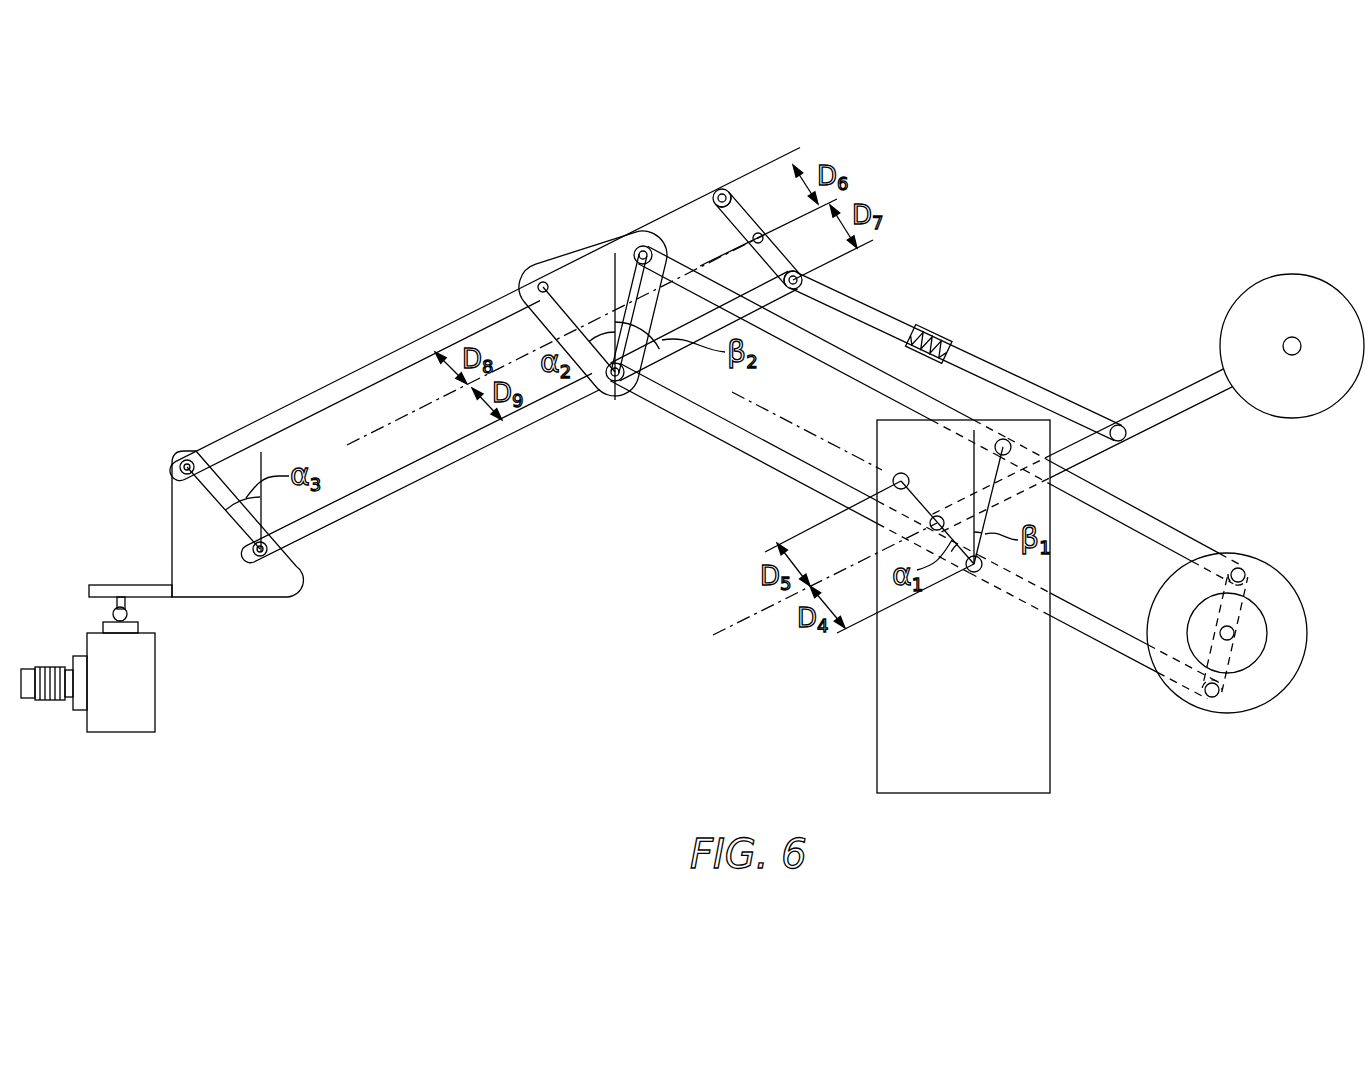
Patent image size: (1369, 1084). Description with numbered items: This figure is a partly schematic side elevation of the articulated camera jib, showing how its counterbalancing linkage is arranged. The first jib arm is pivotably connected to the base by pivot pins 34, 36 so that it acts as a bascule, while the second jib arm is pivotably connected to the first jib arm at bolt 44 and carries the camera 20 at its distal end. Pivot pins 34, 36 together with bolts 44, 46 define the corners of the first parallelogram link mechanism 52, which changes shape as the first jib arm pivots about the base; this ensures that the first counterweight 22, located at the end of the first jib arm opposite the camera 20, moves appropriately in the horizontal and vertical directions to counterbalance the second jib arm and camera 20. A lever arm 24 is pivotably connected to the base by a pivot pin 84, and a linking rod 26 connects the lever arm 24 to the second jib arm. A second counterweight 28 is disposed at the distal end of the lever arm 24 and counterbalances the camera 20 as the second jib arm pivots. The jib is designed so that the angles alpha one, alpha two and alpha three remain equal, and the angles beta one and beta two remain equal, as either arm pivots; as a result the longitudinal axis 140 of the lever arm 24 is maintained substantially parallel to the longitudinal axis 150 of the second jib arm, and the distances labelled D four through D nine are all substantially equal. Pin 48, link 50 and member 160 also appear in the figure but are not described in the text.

The camera 20 is at (122, 722).
The first counterweight 22 is at (1278, 602).
The lever arm 24 is at (1175, 403).
The linking rod 26 is at (987, 358).
The second counterweight 28 is at (1285, 305).
The pivot pin 34 is at (975, 573).
The pivot pin 36 is at (1012, 445).
The bolt 44 is at (615, 383).
The bolt 46 is at (645, 246).
The pivot pin 48 is at (1118, 425).
The pivot link 50 is at (752, 238).
The first parallelogram link mechanism 52 is at (850, 420).
The pivot pin 84 is at (937, 516).
The longitudinal axis of the lever arm 140 is at (748, 617).
The longitudinal axis of the second jib arm 150 is at (413, 410).
The lower beam of second arm 160 is at (772, 412).